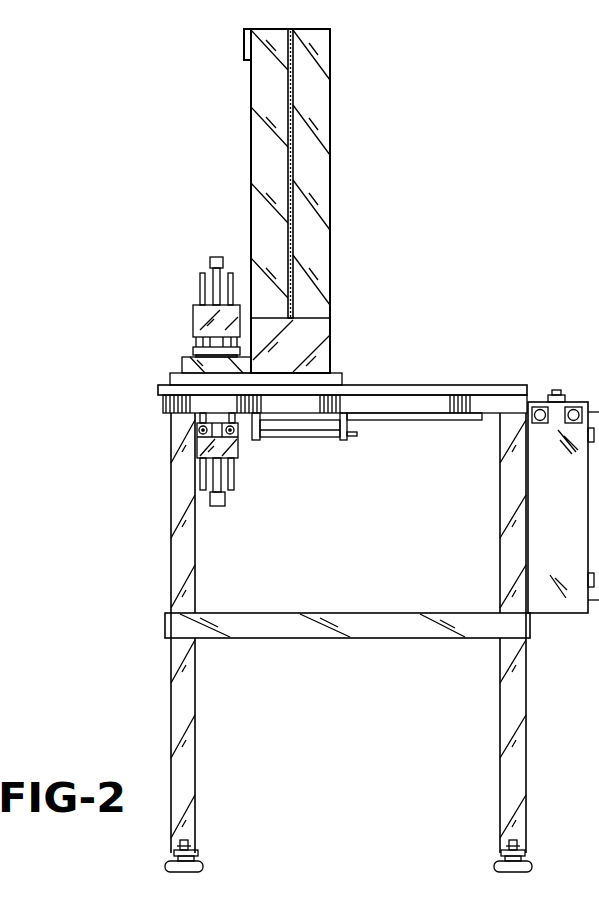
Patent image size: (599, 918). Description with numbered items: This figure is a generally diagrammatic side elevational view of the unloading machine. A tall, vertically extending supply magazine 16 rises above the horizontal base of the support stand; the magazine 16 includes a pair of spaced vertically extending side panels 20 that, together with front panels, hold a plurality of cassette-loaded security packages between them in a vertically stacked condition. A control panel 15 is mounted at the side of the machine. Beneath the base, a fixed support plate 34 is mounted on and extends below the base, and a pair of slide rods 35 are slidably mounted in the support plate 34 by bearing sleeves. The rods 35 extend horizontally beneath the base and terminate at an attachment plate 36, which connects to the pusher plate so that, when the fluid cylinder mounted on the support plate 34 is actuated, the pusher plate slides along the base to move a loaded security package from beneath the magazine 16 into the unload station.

The control panel 15 is at (571, 514).
The supply magazine 16 is at (320, 159).
The side panels 20 is at (318, 99).
The fixed support plate 34 is at (346, 441).
The slide rods 35 is at (300, 438).
The attachment plate 36 is at (258, 441).